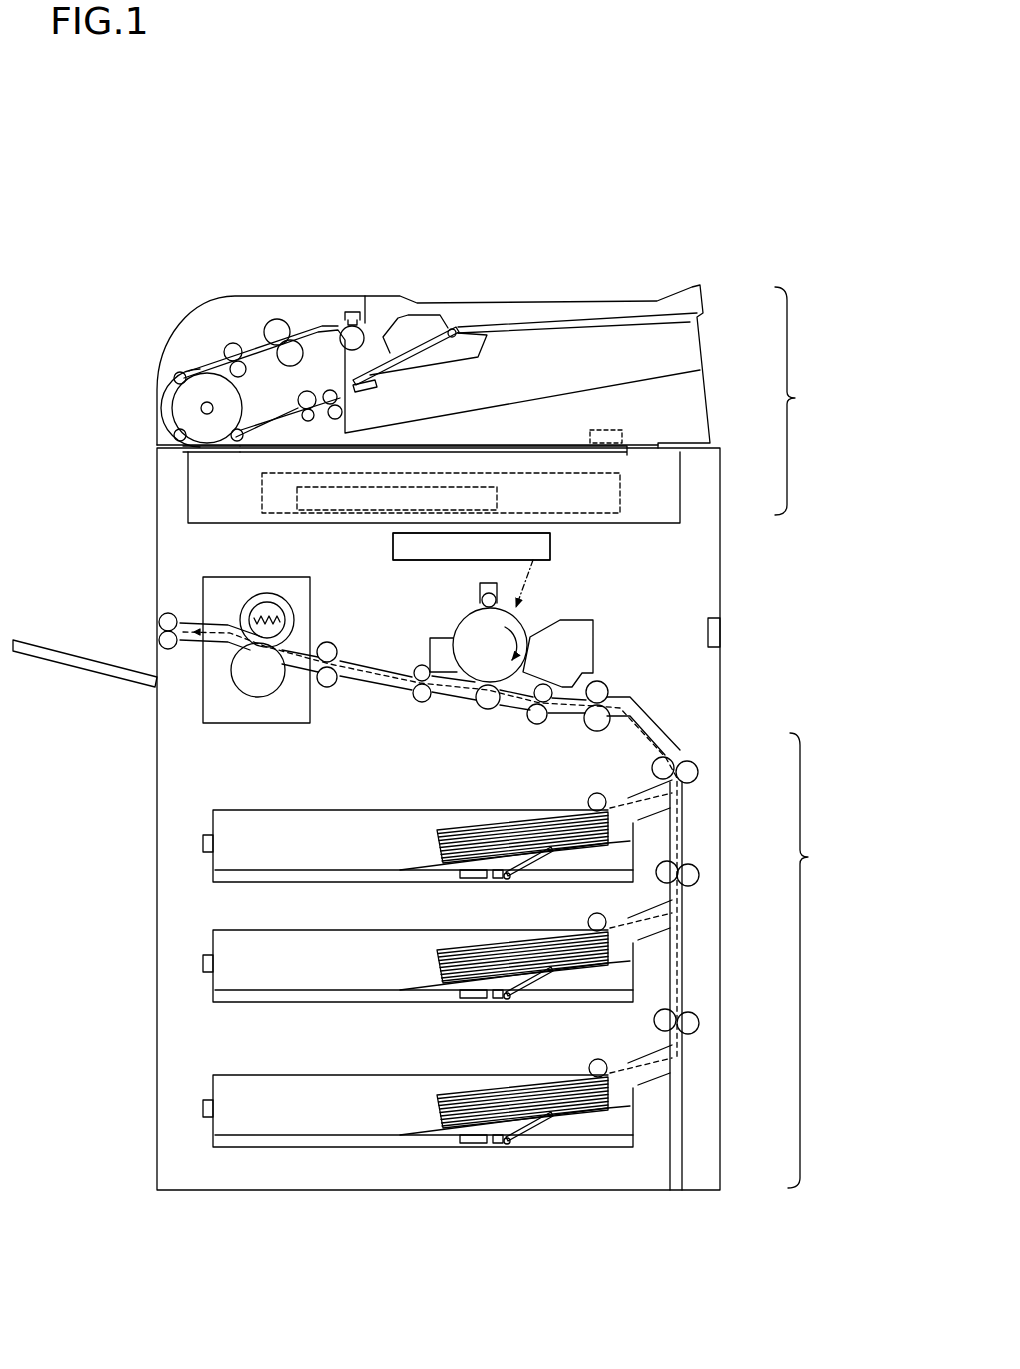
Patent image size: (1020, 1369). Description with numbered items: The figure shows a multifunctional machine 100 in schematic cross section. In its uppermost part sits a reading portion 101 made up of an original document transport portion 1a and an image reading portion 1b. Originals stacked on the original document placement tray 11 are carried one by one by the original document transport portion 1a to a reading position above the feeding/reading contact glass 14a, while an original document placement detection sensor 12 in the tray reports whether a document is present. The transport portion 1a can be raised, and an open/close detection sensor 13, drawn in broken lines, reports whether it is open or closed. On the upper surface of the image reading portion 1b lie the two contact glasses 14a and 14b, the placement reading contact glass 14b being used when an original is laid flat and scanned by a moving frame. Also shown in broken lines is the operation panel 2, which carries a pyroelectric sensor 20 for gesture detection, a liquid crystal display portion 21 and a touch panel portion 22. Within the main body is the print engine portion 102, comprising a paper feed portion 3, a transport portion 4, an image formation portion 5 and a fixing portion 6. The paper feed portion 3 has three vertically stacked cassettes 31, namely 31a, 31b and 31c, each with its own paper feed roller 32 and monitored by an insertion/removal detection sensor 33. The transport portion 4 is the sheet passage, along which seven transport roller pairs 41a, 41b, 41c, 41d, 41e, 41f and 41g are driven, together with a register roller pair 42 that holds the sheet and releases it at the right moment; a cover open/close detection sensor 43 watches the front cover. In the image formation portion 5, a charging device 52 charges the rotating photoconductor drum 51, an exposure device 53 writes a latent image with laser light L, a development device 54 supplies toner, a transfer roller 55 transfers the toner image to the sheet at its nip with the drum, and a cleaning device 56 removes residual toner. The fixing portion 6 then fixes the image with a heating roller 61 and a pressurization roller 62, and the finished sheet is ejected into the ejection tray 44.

The multifunctional machine 100 is at (698, 266).
The original document transport portion 1a is at (175, 340).
The image reading portion 1b is at (690, 483).
The reading portion 101 is at (808, 401).
The print engine portion 102 is at (821, 960).
The original document placement tray 11 is at (585, 313).
The original document placement detection sensor 12 is at (378, 388).
The open/close detection sensor 13 is at (608, 428).
The feeding/reading contact glass 14a is at (220, 455).
The placement reading contact glass 14b is at (485, 447).
The operation panel 2 is at (578, 472).
The pyroelectric sensor 20 is at (548, 505).
The liquid crystal display portion 21 is at (333, 513).
The touch panel portion 22 is at (471, 546).
The paper feed portion 3 is at (176, 836).
The cassettes 31 is at (442, 957).
The cassette 31a is at (340, 810).
The cassette 31b is at (288, 930).
The cassette 31c is at (290, 1075).
The paper feed roller 32 is at (597, 795).
The insertion/removal detection sensor 33 is at (214, 843).
The transport portion 4 is at (660, 720).
The transport roller pair 41a is at (692, 1022).
The transport roller pair 41b is at (692, 874).
The transport roller pair 41c is at (692, 770).
The transport roller pair 41d is at (603, 690).
The transport roller pair 41e is at (422, 702).
The transport roller pair 41f is at (333, 648).
The transport roller pair 41g is at (160, 631).
The register roller pair 42 is at (540, 724).
The cover open/close detection sensor 43 is at (722, 627).
The ejection tray 44 is at (22, 640).
The image formation portion 5 is at (630, 584).
The photoconductor drum 51 is at (468, 625).
The charging device 52 is at (480, 590).
The exposure device 53 is at (546, 549).
The development device 54 is at (580, 620).
The transfer roller 55 is at (490, 703).
The cleaning device 56 is at (430, 650).
The laser light L is at (532, 583).
The fixing portion 6 is at (202, 724).
The heating roller 61 is at (267, 595).
The pressurization roller 62 is at (258, 688).